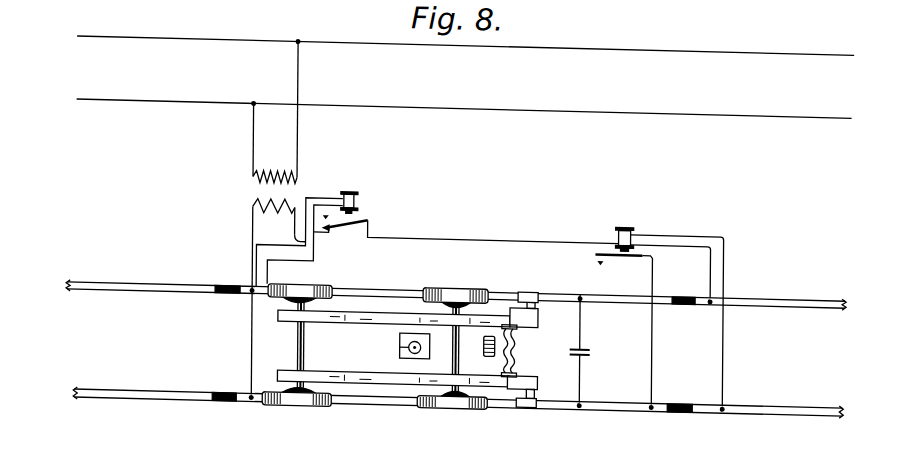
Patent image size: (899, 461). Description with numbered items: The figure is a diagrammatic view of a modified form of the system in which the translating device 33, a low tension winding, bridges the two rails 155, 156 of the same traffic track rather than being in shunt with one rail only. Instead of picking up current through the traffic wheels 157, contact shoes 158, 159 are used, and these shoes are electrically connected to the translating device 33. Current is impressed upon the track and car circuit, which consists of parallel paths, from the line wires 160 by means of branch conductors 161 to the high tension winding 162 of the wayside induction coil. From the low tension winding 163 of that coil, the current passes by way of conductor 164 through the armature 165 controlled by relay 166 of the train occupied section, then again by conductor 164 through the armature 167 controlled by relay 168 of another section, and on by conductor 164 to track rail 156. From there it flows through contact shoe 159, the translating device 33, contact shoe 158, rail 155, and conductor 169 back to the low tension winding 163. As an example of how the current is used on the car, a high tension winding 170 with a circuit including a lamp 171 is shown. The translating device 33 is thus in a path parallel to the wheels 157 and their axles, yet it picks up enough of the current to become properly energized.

The translating device 33 is at (516, 344).
The rail 155 is at (456, 307).
The rail 156 is at (458, 387).
The traffic wheels 157 is at (298, 280).
The contact shoe 158 is at (527, 281).
The contact shoe 159 is at (528, 397).
The line wires 160 is at (398, 37).
The branch conductors 161 is at (295, 133).
The high tension winding 162 is at (296, 181).
The low tension winding 163 is at (279, 219).
The conductor 164 is at (485, 230).
The armature 165 is at (343, 219).
The relay 166 is at (358, 193).
The armature 167 is at (622, 244).
The relay 168 is at (601, 237).
The conductor 169 is at (252, 264).
The high tension winding 170 is at (488, 346).
The lamp 171 is at (400, 344).